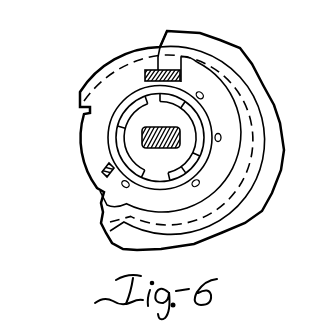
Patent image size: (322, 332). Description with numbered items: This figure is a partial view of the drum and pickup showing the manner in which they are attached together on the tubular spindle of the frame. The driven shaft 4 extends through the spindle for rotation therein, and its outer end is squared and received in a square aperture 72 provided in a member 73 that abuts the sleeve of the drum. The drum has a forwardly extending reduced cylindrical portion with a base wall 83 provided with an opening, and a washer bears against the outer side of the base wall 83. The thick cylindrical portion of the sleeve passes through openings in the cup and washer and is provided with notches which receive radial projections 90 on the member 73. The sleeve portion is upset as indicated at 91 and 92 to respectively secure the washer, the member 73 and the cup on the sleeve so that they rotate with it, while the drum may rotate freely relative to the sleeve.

The driven shaft 4 is at (155, 128).
The square aperture 72 is at (123, 143).
The member 73 is at (130, 157).
The base wall 83 is at (203, 70).
The radial projections 90 is at (162, 96).
The upset portion 91 is at (214, 117).
The upset portion 92 is at (118, 128).